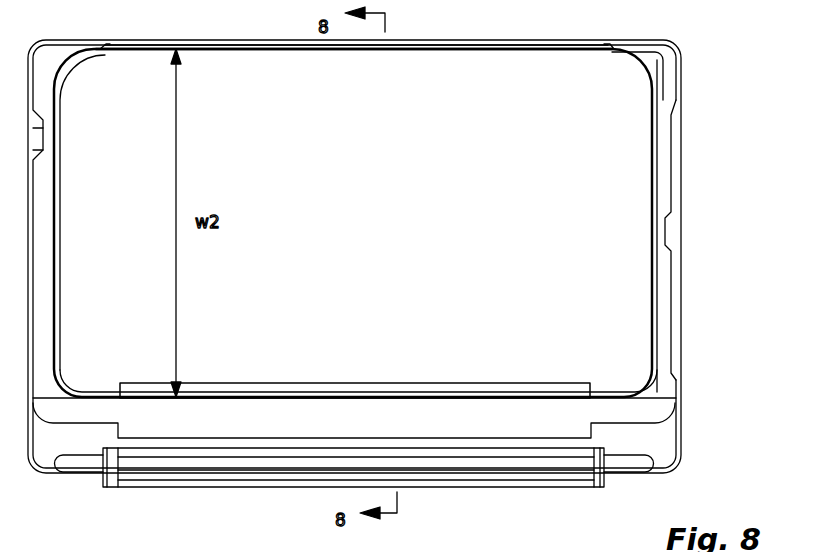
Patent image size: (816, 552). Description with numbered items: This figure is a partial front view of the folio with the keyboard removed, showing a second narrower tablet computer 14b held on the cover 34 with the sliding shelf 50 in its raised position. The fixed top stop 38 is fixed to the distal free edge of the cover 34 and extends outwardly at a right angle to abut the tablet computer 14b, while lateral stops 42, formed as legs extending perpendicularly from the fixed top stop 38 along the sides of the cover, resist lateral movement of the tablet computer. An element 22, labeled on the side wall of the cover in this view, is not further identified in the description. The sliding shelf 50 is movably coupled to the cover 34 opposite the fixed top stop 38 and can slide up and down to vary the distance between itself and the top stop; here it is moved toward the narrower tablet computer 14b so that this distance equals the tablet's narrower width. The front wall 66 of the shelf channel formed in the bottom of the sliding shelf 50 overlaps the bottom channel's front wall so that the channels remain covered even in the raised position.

The second narrower tablet computer 14b is at (618, 308).
The housing 22 is at (676, 155).
The cover 34 is at (681, 262).
The fixed top stop 38 is at (632, 40).
The lateral stops 42 is at (684, 83).
The sliding shelf 50 is at (371, 375).
The front wall 66 is at (233, 417).